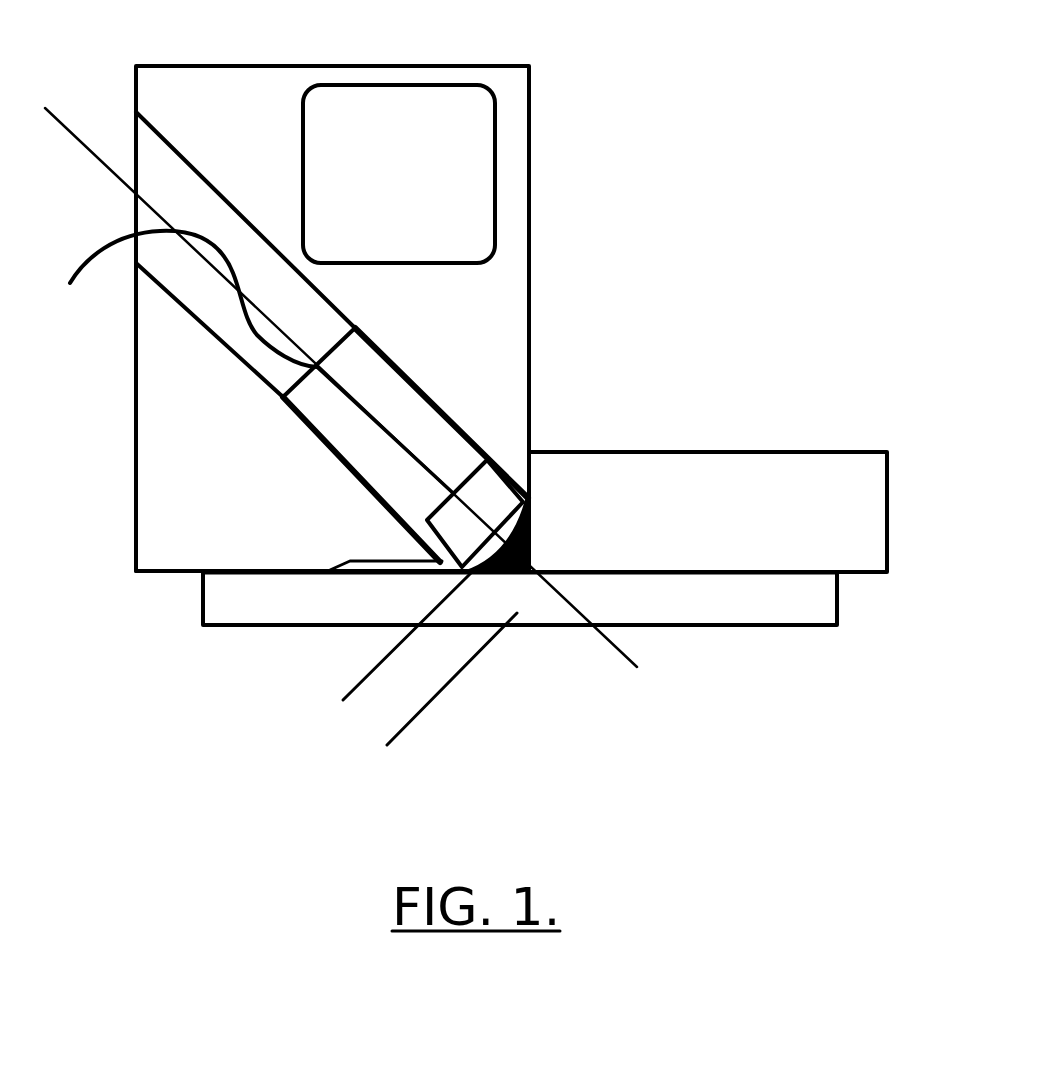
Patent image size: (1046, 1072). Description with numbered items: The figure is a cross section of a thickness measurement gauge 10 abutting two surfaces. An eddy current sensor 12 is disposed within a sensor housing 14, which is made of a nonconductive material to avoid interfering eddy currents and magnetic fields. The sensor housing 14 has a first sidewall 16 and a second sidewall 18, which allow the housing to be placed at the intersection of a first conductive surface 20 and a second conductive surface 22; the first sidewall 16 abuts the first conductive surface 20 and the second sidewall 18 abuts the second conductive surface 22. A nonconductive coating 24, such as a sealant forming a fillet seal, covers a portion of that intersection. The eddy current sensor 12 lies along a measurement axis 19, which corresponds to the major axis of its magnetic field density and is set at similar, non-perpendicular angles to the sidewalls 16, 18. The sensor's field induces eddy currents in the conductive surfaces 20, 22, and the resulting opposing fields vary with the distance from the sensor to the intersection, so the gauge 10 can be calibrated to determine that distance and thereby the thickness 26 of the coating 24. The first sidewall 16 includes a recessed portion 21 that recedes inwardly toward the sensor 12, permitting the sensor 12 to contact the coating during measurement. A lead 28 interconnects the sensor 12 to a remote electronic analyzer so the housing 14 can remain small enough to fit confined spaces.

The thickness measurement gauge 10 is at (747, 66).
The eddy current sensor 12 is at (416, 489).
The sensor housing 14 is at (265, 85).
The first sidewall 16 is at (162, 575).
The second sidewall 18 is at (530, 262).
The measurement axis 19 is at (53, 117).
The first conductive surface 20 is at (292, 575).
The recessed portion 21 is at (370, 558).
The second conductive surface 22 is at (533, 503).
The nonconductive coating 24 is at (535, 532).
The thickness 26 is at (347, 647).
The lead 28 is at (88, 248).